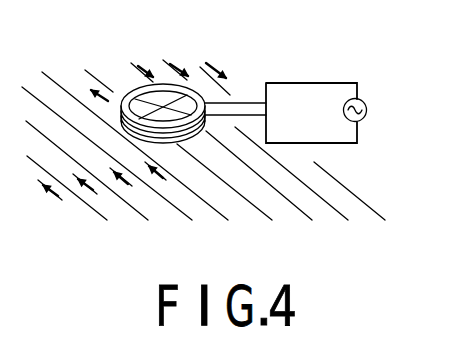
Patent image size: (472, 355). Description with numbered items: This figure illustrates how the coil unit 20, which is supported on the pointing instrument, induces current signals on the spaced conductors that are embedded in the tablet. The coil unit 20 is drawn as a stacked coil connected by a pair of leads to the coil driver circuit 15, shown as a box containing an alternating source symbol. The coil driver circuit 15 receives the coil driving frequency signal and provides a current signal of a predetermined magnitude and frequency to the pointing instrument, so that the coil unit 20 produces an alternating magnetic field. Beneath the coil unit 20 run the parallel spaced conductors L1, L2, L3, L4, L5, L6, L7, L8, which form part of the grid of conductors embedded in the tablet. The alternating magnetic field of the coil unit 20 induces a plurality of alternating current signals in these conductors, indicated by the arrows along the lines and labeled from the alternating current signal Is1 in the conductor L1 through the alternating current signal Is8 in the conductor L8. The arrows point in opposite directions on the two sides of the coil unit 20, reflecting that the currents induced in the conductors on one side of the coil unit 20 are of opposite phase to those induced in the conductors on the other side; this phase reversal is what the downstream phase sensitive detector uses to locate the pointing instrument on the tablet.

The coil unit 20 is at (128, 90).
The coil driver circuit 15 is at (363, 100).
The spaced conductor L1 is at (78, 203).
The spaced conductor L2 is at (99, 186).
The spaced conductor L3 is at (118, 169).
The spaced conductor L4 is at (147, 161).
The spaced conductor L5 is at (189, 160).
The spaced conductor L6 is at (232, 157).
The spaced conductor L7 is at (267, 155).
The spaced conductor L8 is at (303, 159).
The alternating current signal Is1 is at (95, 166).
The alternating current signal Is8 is at (219, 56).